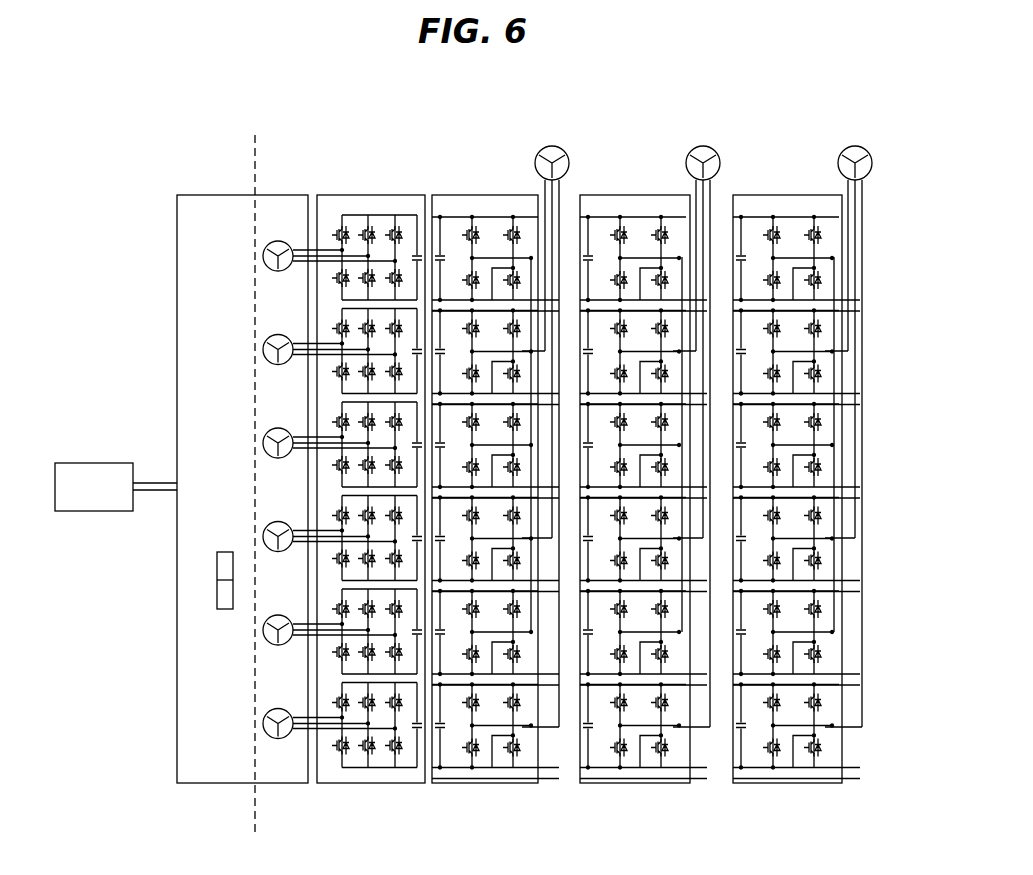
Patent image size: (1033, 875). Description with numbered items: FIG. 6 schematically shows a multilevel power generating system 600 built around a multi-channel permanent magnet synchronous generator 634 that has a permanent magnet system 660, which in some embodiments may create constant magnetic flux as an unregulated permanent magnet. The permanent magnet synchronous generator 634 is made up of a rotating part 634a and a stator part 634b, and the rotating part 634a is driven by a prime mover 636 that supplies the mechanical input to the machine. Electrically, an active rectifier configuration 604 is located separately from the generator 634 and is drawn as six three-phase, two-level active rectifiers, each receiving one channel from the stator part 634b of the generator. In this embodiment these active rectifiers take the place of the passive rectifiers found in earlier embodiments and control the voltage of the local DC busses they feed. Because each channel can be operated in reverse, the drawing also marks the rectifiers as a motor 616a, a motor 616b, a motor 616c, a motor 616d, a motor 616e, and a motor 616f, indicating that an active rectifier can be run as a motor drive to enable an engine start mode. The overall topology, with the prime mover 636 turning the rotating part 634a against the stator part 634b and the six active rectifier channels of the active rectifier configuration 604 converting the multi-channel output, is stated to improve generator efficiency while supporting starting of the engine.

The power generating system 600 is at (724, 92).
The active rectifier configuration 604 is at (425, 183).
The motor 616a is at (263, 262).
The motor 616b is at (263, 355).
The motor 616c is at (263, 449).
The motor 616d is at (263, 542).
The motor 616e is at (263, 636).
The motor 616f is at (263, 729).
The permanent magnet synchronous generator 634 is at (308, 82).
The rotating part 634a is at (255, 152).
The stator part 634b is at (308, 152).
The prime mover 636 is at (116, 487).
The permanent magnet system 660 is at (217, 567).